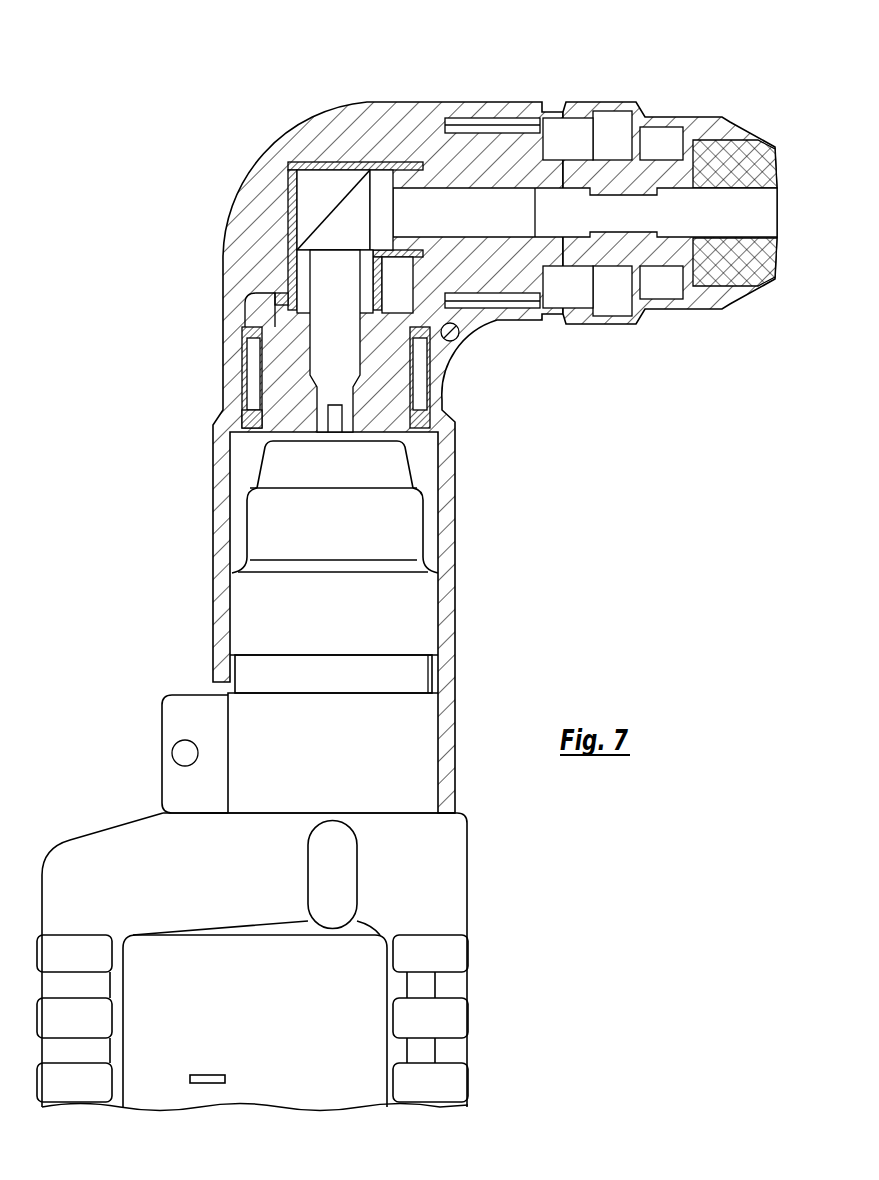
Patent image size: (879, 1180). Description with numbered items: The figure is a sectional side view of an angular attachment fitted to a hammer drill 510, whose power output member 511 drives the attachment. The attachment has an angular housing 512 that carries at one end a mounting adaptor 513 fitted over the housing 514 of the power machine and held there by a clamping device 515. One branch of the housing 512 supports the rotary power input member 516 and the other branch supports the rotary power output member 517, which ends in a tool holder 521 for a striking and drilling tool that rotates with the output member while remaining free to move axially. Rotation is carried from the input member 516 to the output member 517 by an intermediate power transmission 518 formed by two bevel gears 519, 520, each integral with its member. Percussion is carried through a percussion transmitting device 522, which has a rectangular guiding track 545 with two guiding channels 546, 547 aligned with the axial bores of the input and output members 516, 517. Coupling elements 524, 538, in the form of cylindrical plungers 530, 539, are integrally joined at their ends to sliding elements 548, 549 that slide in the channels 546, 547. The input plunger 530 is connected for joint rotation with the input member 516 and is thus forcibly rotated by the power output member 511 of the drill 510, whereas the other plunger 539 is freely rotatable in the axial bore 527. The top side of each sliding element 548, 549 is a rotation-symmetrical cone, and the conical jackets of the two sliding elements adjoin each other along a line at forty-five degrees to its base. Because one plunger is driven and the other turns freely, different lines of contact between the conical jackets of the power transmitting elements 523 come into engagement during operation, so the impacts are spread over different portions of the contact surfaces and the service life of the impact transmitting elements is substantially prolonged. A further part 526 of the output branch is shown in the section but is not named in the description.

The hammer drill 510 is at (270, 1020).
The power output member 511 is at (392, 535).
The angular housing 512 is at (310, 143).
The mounting adaptor 513 is at (250, 466).
The housing of the power machine 514 is at (445, 880).
The clamping device 515 is at (190, 710).
The power input member 516 is at (270, 408).
The power output member 517 is at (512, 208).
The intermediate power transmission 518 is at (460, 345).
The bevel gear 519 is at (253, 296).
The bevel gear 520 is at (411, 180).
The tool holder 521 is at (760, 215).
The percussion transmitting device 522 is at (278, 205).
The power transmitting elements 523 is at (308, 222).
The coupling element 524 is at (306, 330).
The bushing 526 is at (310, 357).
The axial bore 527 is at (570, 203).
The cylindrical plunger 530 is at (330, 315).
The coupling element 538 is at (457, 200).
The cylindrical plunger 539 is at (548, 140).
The rectangular guiding track 545 is at (283, 155).
The guiding channel 546 is at (302, 280).
The guiding channel 547 is at (393, 160).
The sliding element 548 is at (443, 390).
The sliding element 549 is at (537, 318).